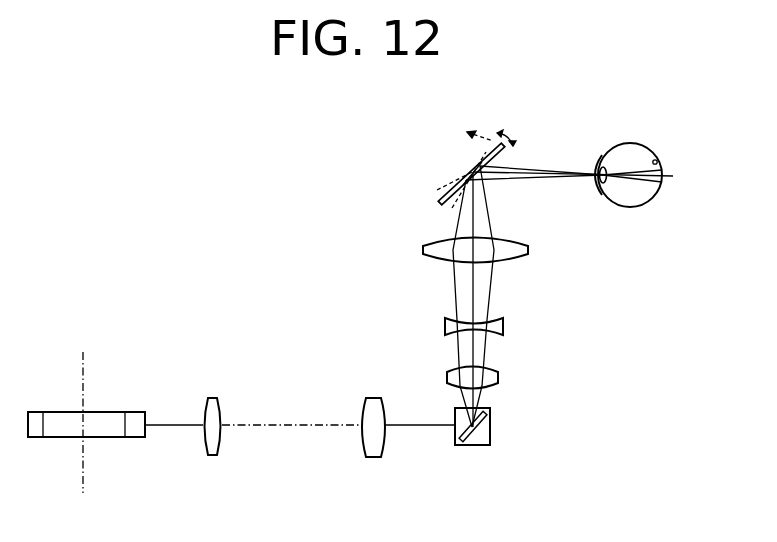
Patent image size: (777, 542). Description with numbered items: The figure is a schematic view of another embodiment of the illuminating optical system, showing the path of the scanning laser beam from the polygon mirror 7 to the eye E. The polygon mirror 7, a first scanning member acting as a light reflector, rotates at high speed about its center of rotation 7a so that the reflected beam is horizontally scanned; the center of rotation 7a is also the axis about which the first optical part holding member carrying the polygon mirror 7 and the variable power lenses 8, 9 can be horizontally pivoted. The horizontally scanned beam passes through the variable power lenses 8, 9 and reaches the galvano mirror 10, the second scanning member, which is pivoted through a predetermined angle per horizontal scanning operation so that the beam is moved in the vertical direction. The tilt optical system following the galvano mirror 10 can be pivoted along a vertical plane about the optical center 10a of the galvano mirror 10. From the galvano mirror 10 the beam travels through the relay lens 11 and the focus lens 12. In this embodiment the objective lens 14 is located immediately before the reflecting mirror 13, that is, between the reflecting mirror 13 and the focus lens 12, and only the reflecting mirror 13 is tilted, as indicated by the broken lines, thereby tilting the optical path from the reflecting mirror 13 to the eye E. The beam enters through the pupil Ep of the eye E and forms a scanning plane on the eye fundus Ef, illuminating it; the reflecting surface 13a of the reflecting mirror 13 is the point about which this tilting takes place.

The polygon mirror 7 is at (129, 412).
The center of rotation of the polygon mirror 7a is at (83, 466).
The variable power lens 8 is at (212, 398).
The variable power lens 9 is at (366, 405).
The galvano mirror 10 is at (490, 413).
The optical center of the galvano mirror 10a is at (478, 433).
The relay lens 11 is at (500, 378).
The focus lens 12 is at (503, 327).
The reflecting mirror 13 is at (488, 148).
The mirror reflecting surface 13a is at (470, 172).
The objective lens 14 is at (528, 250).
The eye E is at (641, 148).
The pupil Ep is at (602, 160).
The eye fundus Ef is at (658, 162).